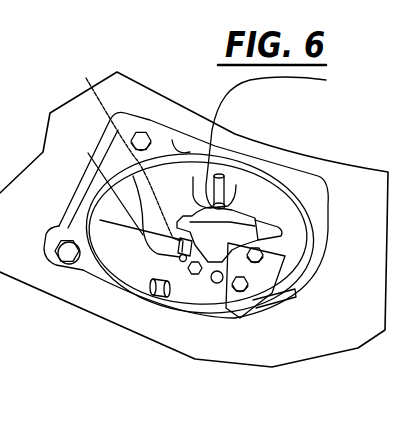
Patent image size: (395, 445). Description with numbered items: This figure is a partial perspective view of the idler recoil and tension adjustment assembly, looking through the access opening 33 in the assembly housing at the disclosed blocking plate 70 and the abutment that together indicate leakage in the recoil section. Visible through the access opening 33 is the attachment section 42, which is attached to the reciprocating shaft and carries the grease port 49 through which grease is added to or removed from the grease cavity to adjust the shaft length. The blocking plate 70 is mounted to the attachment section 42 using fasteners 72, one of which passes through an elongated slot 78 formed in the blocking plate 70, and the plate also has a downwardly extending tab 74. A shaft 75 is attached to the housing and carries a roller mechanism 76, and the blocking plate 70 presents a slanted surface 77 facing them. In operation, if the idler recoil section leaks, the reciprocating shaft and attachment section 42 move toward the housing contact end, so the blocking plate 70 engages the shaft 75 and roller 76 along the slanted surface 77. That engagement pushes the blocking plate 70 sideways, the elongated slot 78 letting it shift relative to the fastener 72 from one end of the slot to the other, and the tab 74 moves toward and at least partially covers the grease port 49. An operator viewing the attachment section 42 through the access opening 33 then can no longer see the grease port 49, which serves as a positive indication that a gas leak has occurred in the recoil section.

The access opening 33 is at (203, 175).
The attachment section 42 is at (135, 308).
The grease port 49 is at (141, 190).
The blocking plate 70 is at (272, 181).
The fasteners 72 is at (195, 272).
The tab 74 is at (78, 72).
The shaft 75 is at (227, 175).
The roller mechanism 76 is at (352, 82).
The slanted surface 77 is at (252, 205).
The elongated slot 78 is at (176, 222).